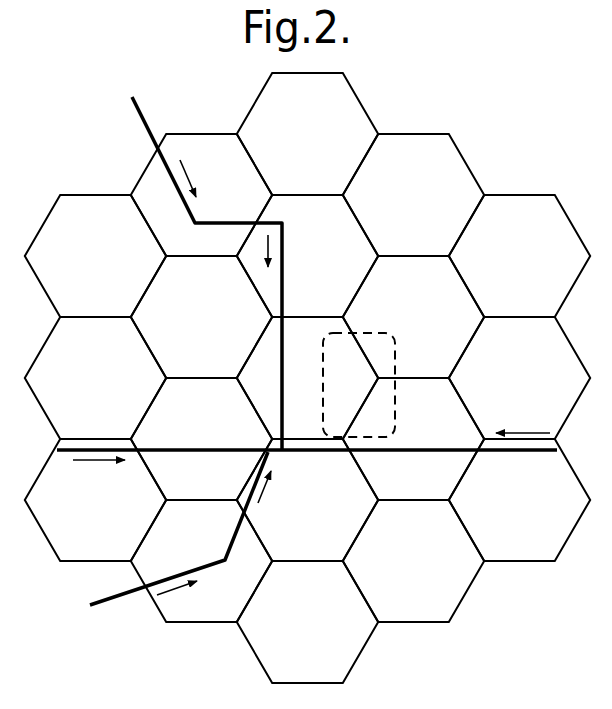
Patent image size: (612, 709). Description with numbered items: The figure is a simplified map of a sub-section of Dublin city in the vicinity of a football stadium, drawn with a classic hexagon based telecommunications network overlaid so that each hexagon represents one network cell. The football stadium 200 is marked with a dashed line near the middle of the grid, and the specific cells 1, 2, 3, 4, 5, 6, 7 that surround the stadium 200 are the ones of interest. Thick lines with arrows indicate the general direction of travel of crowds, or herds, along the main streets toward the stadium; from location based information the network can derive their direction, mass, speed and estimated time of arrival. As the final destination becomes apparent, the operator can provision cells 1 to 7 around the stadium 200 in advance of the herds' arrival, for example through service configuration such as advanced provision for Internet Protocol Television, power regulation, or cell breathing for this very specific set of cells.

The cell 1 is at (298, 394).
The cell 2 is at (300, 269).
The cell 3 is at (193, 327).
The cell 4 is at (193, 439).
The cell 5 is at (300, 519).
The cell 6 is at (408, 439).
The cell 7 is at (405, 327).
The football stadium 200 is at (395, 360).